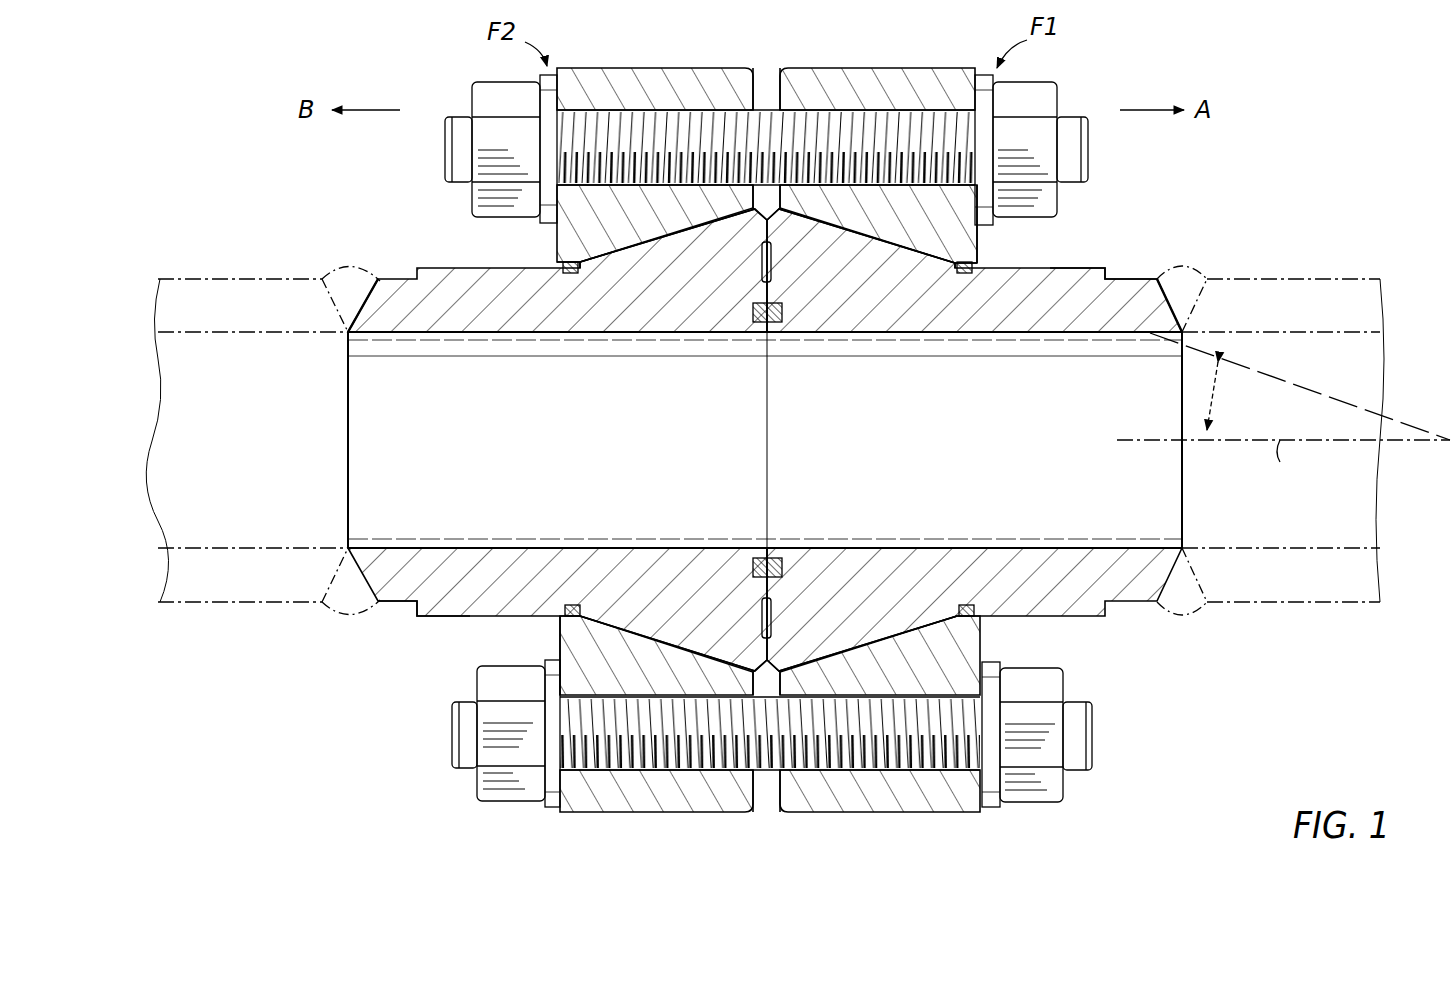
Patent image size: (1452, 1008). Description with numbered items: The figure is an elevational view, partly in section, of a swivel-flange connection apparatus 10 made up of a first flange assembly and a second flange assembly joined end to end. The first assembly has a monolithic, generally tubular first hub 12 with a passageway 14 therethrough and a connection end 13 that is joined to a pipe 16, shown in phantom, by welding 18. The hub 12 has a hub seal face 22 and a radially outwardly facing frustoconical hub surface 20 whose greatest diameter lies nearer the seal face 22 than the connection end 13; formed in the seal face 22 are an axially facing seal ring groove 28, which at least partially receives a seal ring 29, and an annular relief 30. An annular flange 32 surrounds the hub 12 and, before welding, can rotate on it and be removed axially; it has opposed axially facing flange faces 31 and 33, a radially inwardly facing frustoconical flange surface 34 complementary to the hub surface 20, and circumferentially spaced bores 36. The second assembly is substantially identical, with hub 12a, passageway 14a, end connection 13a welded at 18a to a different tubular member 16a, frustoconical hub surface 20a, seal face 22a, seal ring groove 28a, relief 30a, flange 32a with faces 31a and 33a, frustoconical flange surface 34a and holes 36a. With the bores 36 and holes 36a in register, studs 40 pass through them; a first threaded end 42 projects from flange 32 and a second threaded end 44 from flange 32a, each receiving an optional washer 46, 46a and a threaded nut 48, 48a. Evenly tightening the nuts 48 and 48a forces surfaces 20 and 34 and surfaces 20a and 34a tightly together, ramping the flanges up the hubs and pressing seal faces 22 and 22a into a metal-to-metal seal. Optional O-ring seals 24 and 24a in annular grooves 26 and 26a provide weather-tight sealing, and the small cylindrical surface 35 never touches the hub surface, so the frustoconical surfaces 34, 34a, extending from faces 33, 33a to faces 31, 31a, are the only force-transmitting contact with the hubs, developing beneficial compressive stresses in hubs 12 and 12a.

The connection apparatus 10 is at (1178, 50).
The first hub 12 is at (1095, 268).
The hub 12a is at (445, 602).
The connection end 13 is at (1169, 290).
The end connection 13a is at (388, 286).
The passageway 14 is at (1040, 495).
The passageway 14a is at (480, 495).
The pipe 16 is at (1295, 278).
The tubular member 16a is at (216, 276).
The welding 18 is at (1190, 284).
The welding 18a is at (336, 275).
The frustoconical hub surface 20 is at (910, 236).
The frustoconical hub surface 20a is at (613, 251).
The hub seal face 22 is at (772, 247).
The seal face 22a is at (765, 618).
The O-ring seal 24 is at (963, 276).
The O-ring seal 24a is at (567, 274).
The annular groove 26 is at (977, 278).
The annular groove 26a is at (582, 274).
The seal ring groove 28 is at (771, 324).
The seal ring groove 28a is at (760, 324).
The seal ring 29 is at (774, 558).
The relief 30 is at (835, 246).
The relief 30a is at (700, 240).
The flange face 31 is at (980, 248).
The flange face 31a is at (558, 634).
The annular flange 32 is at (872, 78).
The flange 32a is at (641, 78).
The flange face 33 is at (764, 95).
The flange face 33a is at (767, 810).
The frustoconical flange surface 34 is at (890, 240).
The frustoconical flange surface 34a is at (638, 638).
The small cylindrical surface 35 is at (996, 615).
The bores 36 is at (818, 108).
The holes 36a is at (597, 108).
The studs 40 is at (658, 790).
The first threaded end 42 is at (1092, 740).
The second threaded end 44 is at (452, 742).
The washer 46 is at (988, 808).
The washer 46a is at (550, 808).
The threaded nut 48 is at (1045, 818).
The threaded nut 48a is at (485, 792).